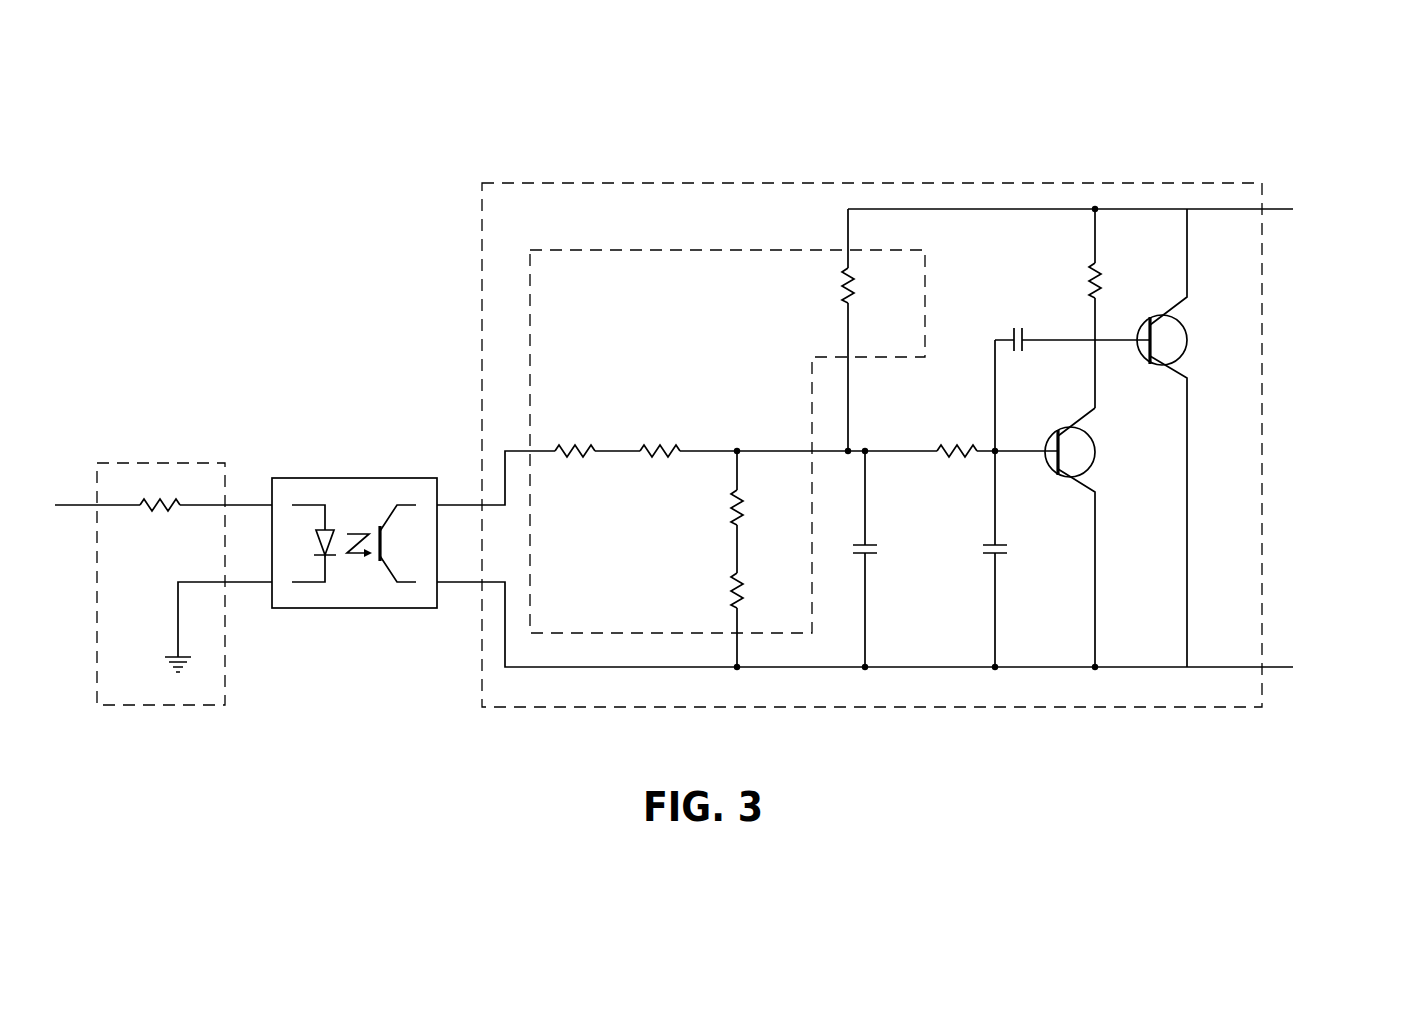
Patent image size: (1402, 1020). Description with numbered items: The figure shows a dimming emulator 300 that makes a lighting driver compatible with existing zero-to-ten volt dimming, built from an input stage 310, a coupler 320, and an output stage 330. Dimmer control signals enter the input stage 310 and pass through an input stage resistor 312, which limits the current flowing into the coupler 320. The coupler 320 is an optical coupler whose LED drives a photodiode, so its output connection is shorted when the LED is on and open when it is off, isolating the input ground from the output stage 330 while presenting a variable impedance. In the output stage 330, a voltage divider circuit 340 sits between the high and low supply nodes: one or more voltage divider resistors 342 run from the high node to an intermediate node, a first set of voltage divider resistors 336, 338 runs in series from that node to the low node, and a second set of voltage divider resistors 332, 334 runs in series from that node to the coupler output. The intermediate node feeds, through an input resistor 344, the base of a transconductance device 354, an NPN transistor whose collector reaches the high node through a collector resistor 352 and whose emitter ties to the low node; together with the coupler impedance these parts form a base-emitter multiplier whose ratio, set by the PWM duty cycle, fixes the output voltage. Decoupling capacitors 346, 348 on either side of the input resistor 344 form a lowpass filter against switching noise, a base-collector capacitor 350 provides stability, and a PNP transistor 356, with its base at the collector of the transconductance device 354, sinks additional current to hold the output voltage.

The dimming emulator 300 is at (100, 93).
The input stage 310 is at (159, 464).
The input stage resistor 312 is at (162, 512).
The coupler 320 is at (354, 480).
The output stage 330 is at (869, 182).
The voltage divider resistor 332 is at (575, 457).
The voltage divider resistor 334 is at (660, 457).
The voltage divider resistor 336 is at (745, 507).
The voltage divider resistor 338 is at (745, 590).
The voltage divider circuit 340 is at (727, 249).
The voltage divider resistor 342 is at (855, 287).
The input resistor 344 is at (957, 457).
The decoupling capacitor 346 is at (879, 549).
The decoupling capacitor 348 is at (1009, 549).
The base-collector capacitor 350 is at (1020, 353).
The collector resistor 352 is at (1102, 280).
The transconductance device 354 is at (1097, 452).
The PNP transistor 356 is at (1189, 340).